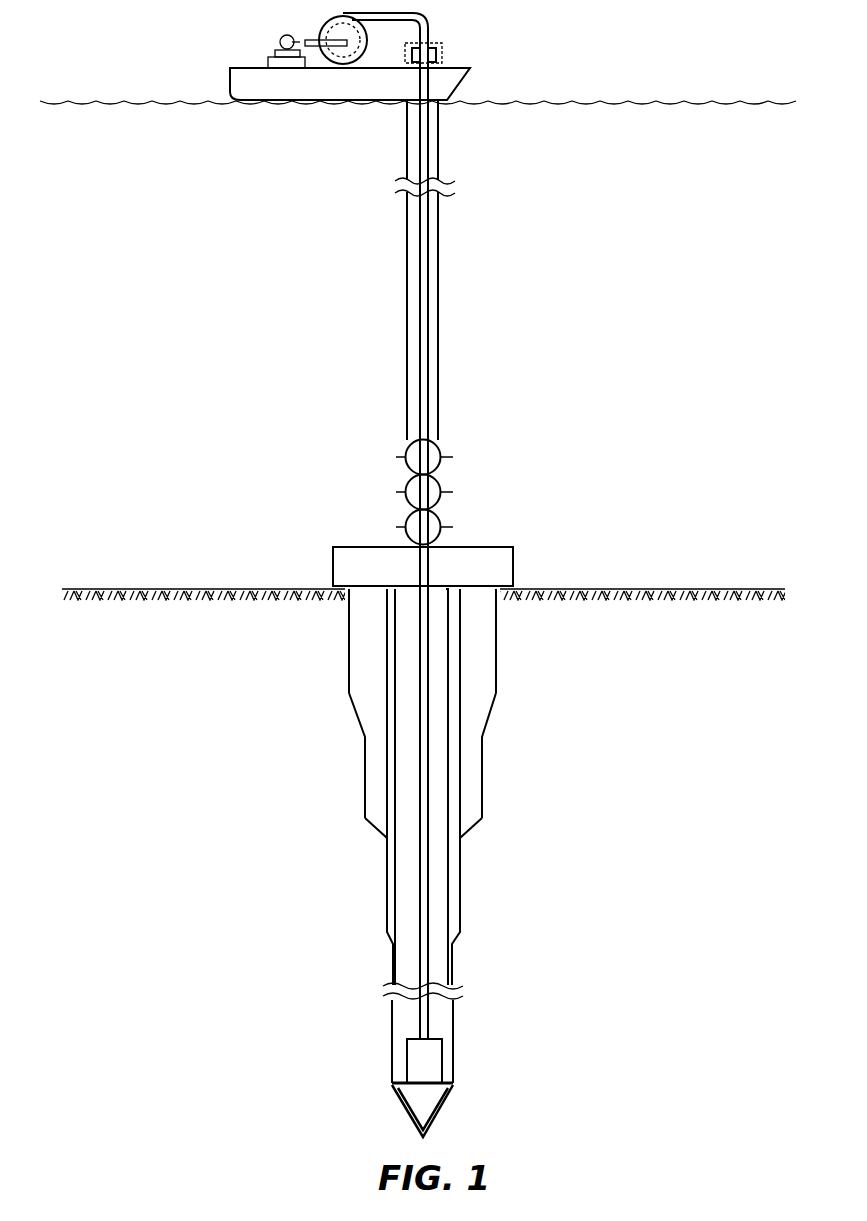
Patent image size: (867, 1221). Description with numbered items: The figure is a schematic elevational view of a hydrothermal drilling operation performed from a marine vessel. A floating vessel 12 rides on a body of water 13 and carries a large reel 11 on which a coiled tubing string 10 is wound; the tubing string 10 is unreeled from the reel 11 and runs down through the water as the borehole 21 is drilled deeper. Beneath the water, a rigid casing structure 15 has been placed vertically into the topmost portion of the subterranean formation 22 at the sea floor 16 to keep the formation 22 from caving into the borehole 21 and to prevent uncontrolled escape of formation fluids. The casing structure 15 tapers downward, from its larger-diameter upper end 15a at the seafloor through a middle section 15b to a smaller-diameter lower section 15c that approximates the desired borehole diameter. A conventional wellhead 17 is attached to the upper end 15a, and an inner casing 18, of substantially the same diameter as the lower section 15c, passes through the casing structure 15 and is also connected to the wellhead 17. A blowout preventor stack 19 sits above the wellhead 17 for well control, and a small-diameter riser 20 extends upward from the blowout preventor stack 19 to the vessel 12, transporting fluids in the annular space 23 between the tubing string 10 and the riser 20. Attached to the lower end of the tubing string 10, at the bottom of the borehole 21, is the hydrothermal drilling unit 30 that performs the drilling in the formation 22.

The coiled tubing string 10 is at (428, 244).
The reel 11 is at (318, 26).
The floating vessel 12 is at (466, 82).
The body of water 13 is at (615, 306).
The casing structure 15 is at (456, 713).
The upper end of casing structure 15a is at (497, 655).
The middle section of casing structure 15b is at (485, 737).
The lower section of casing structure 15c is at (483, 797).
The sea floor 16 is at (641, 589).
The wellhead 17 is at (513, 563).
The inner casing 18 is at (462, 888).
The blowout preventor stack 19 is at (455, 490).
The riser 20 is at (439, 331).
The borehole 21 is at (453, 1046).
The subterranean formation 22 is at (614, 1003).
The annular space 23 is at (432, 288).
The hydrothermal drilling unit 30 is at (436, 1076).